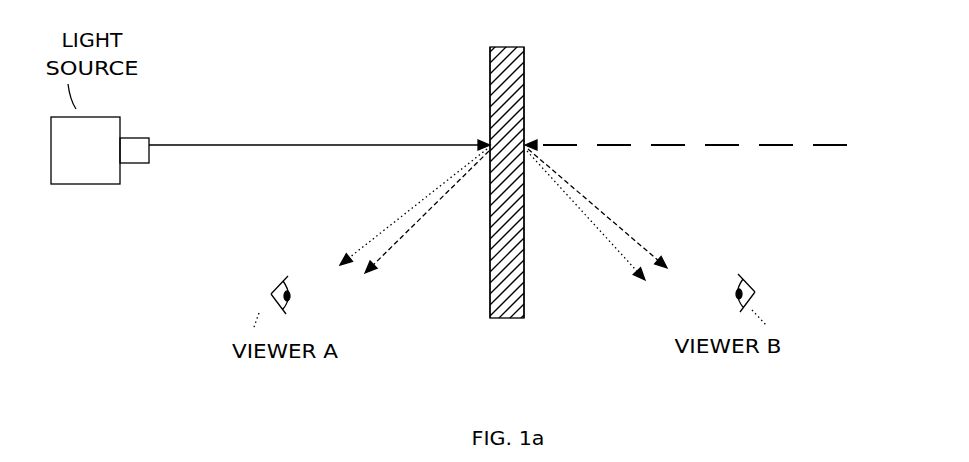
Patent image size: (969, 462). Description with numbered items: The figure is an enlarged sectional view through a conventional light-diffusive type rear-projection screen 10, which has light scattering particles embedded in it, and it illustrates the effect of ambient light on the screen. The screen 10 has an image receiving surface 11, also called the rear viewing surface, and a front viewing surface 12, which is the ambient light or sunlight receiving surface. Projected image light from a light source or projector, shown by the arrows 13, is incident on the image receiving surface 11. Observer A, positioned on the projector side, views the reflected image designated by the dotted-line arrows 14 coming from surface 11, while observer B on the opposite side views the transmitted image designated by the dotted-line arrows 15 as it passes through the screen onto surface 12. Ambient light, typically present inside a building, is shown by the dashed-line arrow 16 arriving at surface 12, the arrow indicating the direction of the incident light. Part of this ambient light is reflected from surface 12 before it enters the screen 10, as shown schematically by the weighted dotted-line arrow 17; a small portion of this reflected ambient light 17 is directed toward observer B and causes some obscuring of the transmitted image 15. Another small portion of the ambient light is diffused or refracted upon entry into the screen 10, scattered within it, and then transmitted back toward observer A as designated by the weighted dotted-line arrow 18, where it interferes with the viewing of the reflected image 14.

The light-diffusive type rear-projection screen 10 is at (490, 60).
The image receiving surface 11 is at (490, 93).
The front viewing surface 12 is at (524, 77).
The projected image light arrows 13 is at (312, 144).
The reflected image arrows 14 is at (412, 207).
The transmitted image arrows 15 is at (563, 195).
The ambient light arrow 16 is at (705, 140).
The reflected ambient light arrow 17 is at (601, 209).
The transmitted ambient light arrow 18 is at (442, 199).